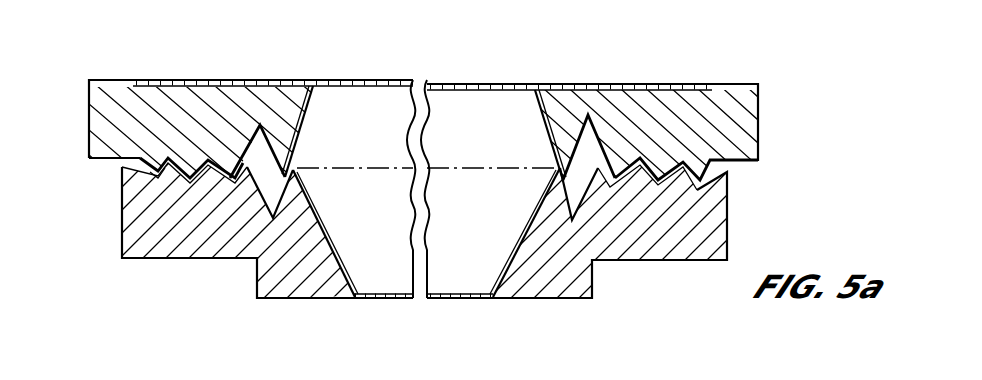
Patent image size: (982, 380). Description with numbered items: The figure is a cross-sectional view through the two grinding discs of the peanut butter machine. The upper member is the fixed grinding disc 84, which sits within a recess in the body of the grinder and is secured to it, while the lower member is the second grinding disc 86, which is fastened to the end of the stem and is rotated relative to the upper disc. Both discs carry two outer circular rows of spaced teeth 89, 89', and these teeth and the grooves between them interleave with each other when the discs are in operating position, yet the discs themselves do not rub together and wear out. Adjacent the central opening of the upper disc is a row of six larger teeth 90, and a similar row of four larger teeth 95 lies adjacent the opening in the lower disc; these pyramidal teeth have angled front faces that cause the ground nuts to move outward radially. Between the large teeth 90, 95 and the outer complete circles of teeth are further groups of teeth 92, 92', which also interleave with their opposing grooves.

The fixed grinding disc 84 is at (762, 120).
The second grinding disc 86 is at (736, 227).
The outer circular rows of spaced teeth 89 is at (383, 213).
The outer circular rows of spaced teeth 89' is at (111, 191).
The row of six teeth 90 is at (307, 125).
The group of teeth 92 is at (420, 113).
The group of teeth 92' is at (433, 245).
The row of four teeth 95 is at (523, 238).